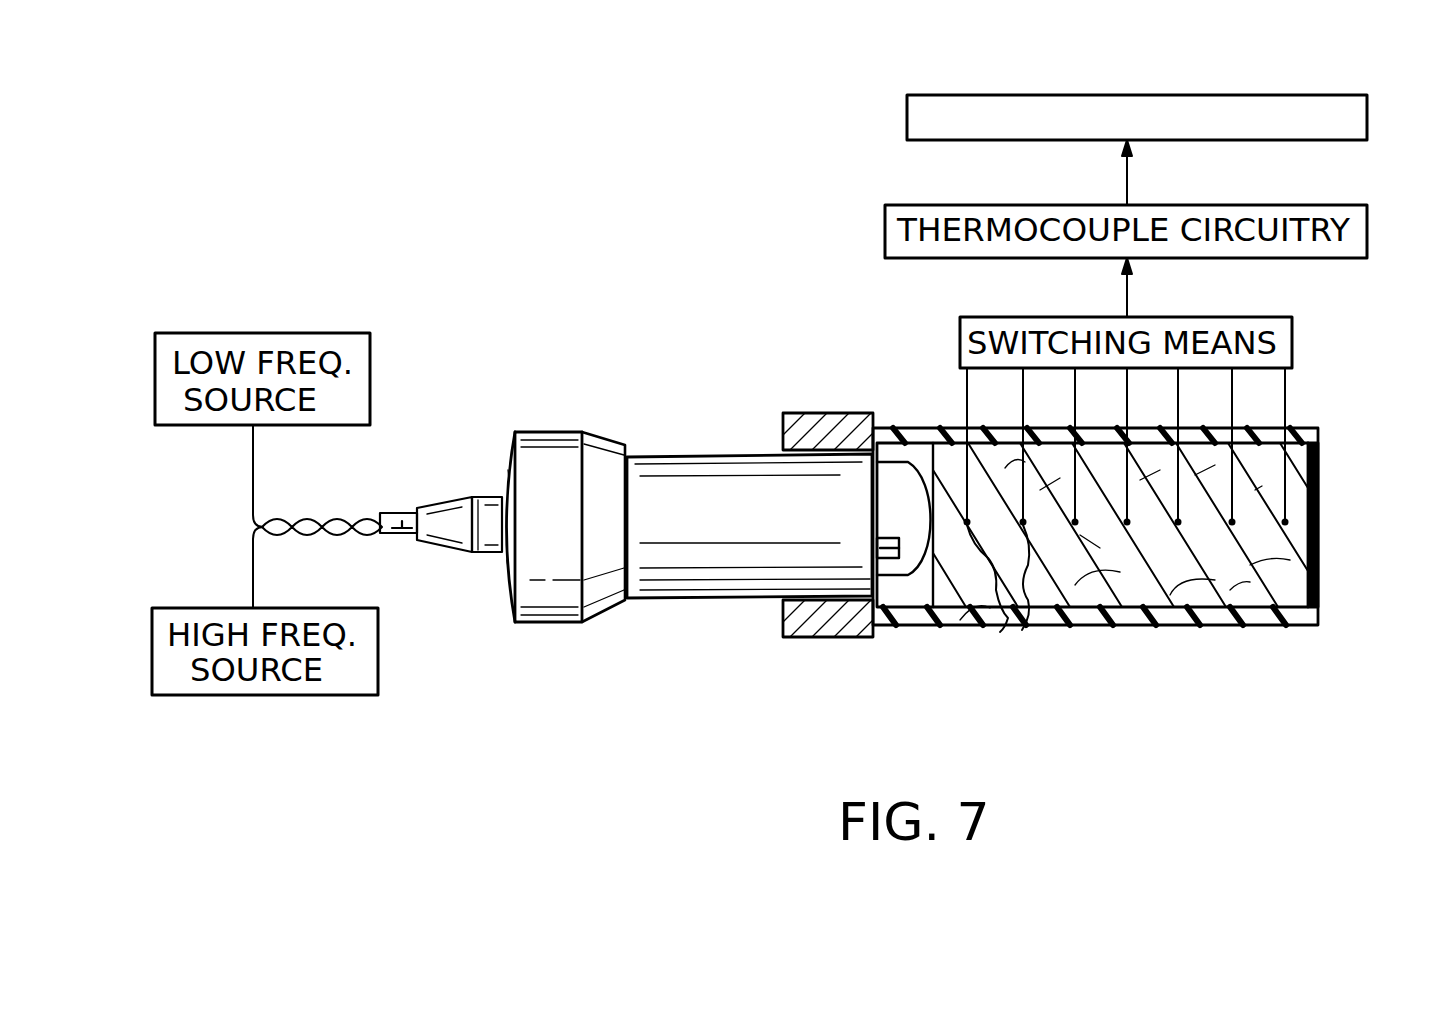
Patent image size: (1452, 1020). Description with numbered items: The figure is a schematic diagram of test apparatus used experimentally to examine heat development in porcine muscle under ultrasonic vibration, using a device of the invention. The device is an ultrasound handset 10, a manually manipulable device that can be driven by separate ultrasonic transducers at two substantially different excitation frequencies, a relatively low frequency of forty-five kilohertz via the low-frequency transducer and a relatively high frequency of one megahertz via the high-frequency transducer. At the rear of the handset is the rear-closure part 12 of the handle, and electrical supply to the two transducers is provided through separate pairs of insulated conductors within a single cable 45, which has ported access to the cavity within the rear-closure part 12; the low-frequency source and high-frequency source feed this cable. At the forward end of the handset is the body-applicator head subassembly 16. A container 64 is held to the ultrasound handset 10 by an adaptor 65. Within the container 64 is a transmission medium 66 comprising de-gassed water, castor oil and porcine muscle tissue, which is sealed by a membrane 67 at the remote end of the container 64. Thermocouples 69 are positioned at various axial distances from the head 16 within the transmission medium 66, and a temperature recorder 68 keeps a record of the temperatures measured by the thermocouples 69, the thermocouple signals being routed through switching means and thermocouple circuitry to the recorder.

The ultrasound handset 10 is at (690, 456).
The rear-closure part 12 is at (549, 452).
The head subassembly 16 is at (912, 600).
The cable 45 is at (400, 535).
The container 64 is at (1130, 628).
The adaptor 65 is at (797, 432).
The transmission medium 66 is at (1228, 605).
The membrane 67 is at (1320, 540).
The temperature recorder 68 is at (1368, 118).
The thermocouples 69 is at (1002, 612).